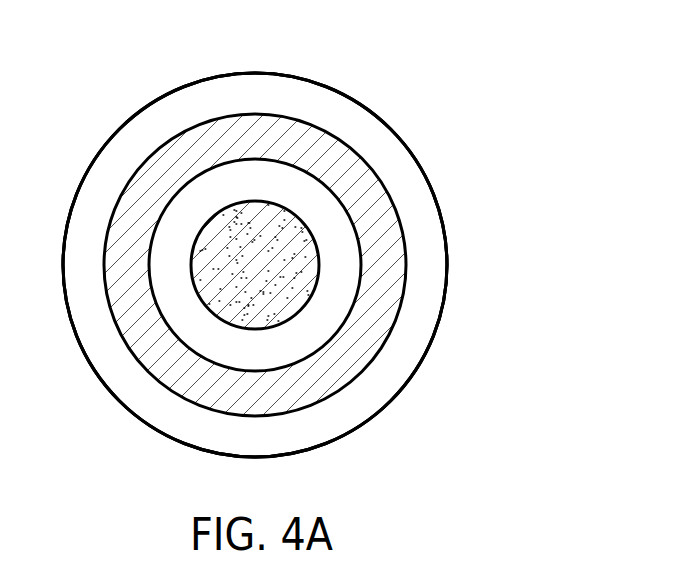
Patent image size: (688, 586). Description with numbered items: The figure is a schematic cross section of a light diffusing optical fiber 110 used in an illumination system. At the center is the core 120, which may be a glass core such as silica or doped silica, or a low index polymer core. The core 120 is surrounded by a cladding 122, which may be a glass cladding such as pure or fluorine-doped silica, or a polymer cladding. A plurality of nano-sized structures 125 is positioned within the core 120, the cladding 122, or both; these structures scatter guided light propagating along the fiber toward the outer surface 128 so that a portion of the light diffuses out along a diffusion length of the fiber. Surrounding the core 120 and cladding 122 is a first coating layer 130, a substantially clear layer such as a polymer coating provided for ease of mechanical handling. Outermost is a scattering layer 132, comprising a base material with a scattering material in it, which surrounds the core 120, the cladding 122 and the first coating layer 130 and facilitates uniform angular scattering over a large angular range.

The light diffusing optical fiber 110 is at (416, 90).
The core 120 is at (310, 222).
The cladding 122 is at (335, 247).
The nano-sized structures 125 is at (210, 240).
The outer surface 128 is at (135, 105).
The first coating layer 130 is at (385, 315).
The scattering layer 132 is at (373, 398).